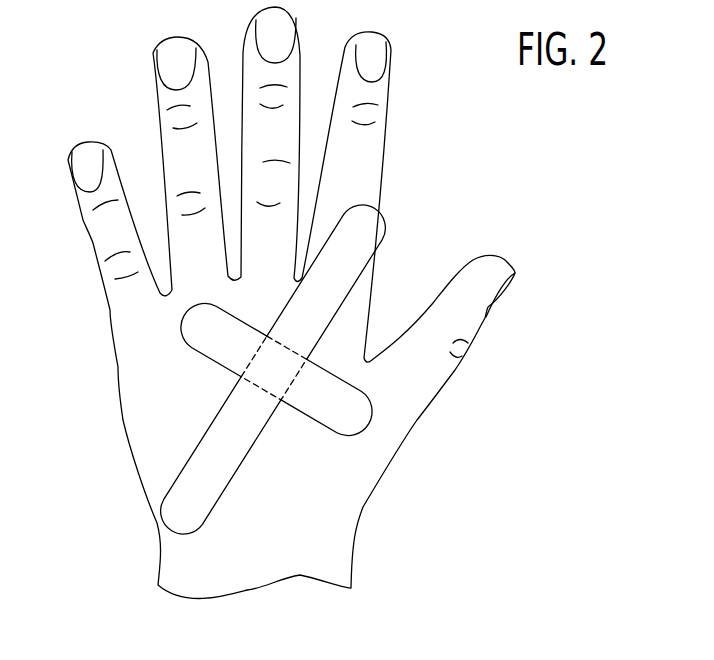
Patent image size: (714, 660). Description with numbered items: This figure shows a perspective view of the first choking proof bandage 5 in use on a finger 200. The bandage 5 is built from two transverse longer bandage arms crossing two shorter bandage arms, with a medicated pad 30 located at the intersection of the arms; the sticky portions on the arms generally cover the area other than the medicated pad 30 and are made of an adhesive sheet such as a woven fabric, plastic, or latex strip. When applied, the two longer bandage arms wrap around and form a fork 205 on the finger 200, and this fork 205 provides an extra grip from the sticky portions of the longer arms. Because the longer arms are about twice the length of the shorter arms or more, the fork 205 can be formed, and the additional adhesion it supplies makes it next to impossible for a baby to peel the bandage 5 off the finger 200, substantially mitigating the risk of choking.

The finger 200 is at (387, 118).
The first choking proof bandage 5 is at (258, 367).
The medicated pad 30 is at (265, 388).
The fork 205 is at (224, 377).